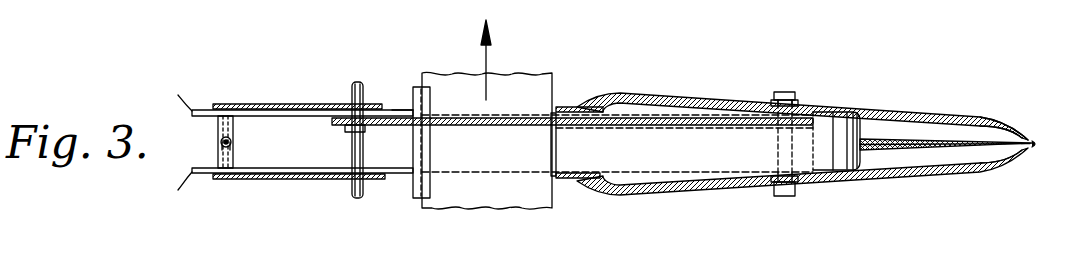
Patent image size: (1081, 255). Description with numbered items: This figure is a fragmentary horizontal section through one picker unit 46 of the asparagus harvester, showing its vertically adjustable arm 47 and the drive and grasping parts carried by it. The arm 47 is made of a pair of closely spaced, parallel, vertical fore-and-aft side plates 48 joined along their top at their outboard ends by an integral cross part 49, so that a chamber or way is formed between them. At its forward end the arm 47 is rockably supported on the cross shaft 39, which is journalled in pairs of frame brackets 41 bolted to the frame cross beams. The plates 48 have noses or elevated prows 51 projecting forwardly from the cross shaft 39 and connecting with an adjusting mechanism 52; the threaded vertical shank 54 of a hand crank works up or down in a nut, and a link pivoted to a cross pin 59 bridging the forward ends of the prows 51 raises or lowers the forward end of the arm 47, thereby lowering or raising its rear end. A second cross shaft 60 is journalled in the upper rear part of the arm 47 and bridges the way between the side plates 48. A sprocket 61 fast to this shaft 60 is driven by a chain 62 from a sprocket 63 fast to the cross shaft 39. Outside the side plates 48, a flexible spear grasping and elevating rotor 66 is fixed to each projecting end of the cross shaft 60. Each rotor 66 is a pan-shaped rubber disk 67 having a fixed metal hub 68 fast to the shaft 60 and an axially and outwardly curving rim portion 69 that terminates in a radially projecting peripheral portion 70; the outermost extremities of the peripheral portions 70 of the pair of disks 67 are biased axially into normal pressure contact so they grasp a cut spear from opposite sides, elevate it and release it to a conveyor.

The cross shaft 39 is at (353, 86).
The frame brackets 41 is at (268, 103).
The picker unit 46 is at (869, 163).
The vertically adjustable arm 47 is at (396, 110).
The side plates 48 is at (414, 90).
The integral cross part 49 is at (847, 114).
The noses or elevated prows 51 is at (283, 146).
The adjusting mechanism 52 is at (216, 141).
The threaded vertical shank 54 is at (231, 140).
The cross pin 59 is at (233, 150).
The cross shaft 60 is at (789, 92).
The sprocket 61 is at (770, 134).
The chain 62 is at (386, 127).
The sprocket 63 is at (346, 132).
The flexible spear grasping and elevating rotor 66 is at (984, 115).
The rubber disk 67 is at (917, 105).
The fixed metal hub 68 is at (777, 92).
The axially and outwardly curving rim portion 69 is at (998, 128).
The radially projecting peripheral portion 70 is at (1038, 144).